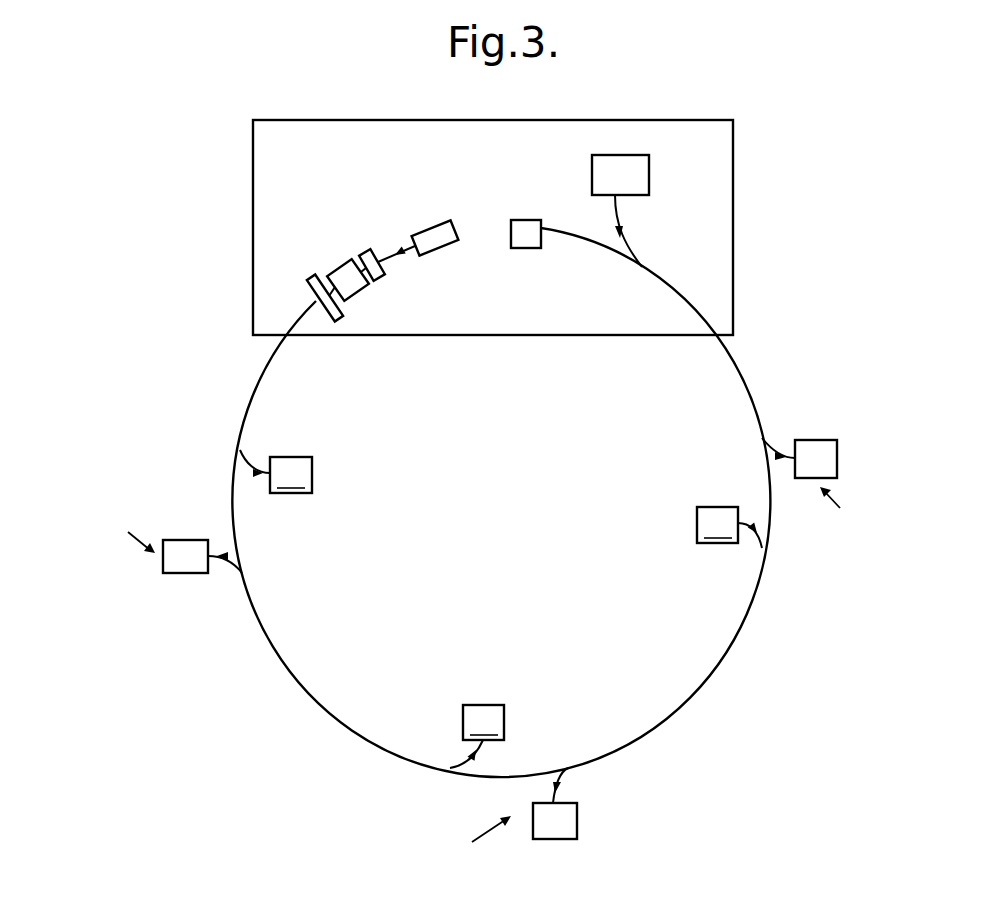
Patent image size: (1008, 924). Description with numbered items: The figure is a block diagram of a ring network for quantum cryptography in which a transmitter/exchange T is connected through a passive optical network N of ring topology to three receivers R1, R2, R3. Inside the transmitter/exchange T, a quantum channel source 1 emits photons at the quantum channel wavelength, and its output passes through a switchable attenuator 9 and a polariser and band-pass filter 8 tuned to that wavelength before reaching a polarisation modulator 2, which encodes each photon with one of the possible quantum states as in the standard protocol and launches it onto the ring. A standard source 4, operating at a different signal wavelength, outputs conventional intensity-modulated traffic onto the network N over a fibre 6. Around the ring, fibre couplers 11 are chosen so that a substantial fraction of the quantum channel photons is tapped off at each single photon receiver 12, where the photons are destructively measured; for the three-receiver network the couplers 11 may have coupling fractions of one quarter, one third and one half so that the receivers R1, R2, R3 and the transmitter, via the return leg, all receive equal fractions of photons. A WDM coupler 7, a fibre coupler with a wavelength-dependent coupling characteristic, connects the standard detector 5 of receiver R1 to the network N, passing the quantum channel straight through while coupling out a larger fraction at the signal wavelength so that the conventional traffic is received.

The quantum channel source 1 is at (425, 228).
The polarisation modulator 2 is at (310, 285).
The standard source 4 is at (650, 176).
The standard detector 5 is at (183, 574).
The signal fibre from transmitter 6 is at (641, 279).
The WDM coupler 7 is at (240, 574).
The polariser and band-pass filter 8 is at (342, 270).
The switchable attenuator 9 is at (382, 276).
The fibre coupler 11 is at (244, 446).
The single photon receiver 12 is at (523, 217).
The transmitter/exchange T is at (677, 126).
The passive optical network N is at (687, 702).
The receiver R1 is at (114, 520).
The receiver R2 is at (495, 846).
The receiver R3 is at (843, 509).